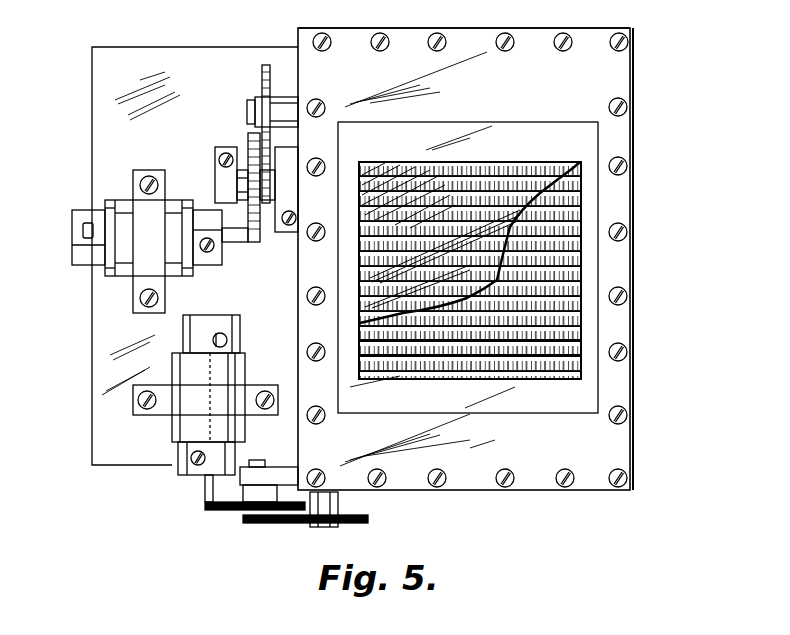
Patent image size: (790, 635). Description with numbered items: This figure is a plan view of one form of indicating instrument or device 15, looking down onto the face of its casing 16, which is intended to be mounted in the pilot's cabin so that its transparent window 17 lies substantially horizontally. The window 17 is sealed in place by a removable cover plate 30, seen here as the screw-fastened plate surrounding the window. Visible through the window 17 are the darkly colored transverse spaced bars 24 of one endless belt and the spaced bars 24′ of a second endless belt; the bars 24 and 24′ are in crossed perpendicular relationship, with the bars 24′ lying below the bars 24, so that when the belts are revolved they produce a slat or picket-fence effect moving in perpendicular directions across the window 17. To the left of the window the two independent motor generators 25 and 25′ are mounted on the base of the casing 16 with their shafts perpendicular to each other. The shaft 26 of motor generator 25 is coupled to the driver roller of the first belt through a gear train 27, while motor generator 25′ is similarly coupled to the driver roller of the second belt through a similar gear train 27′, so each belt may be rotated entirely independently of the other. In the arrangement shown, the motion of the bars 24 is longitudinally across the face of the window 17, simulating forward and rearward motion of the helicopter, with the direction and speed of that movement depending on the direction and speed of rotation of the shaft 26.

The indicating instrument or device 15 is at (643, 68).
The casing 16 is at (634, 146).
The transparent window 17 is at (370, 210).
The transverse spaced bars 24 is at (565, 352).
The spaced bars 24′ is at (518, 338).
The motor generator 25 is at (112, 178).
The motor generator 25′ is at (160, 436).
The shaft 26 is at (237, 242).
The gear train 27 is at (237, 131).
The gear train 27′ is at (292, 528).
The removable cover plate 30 is at (411, 48).